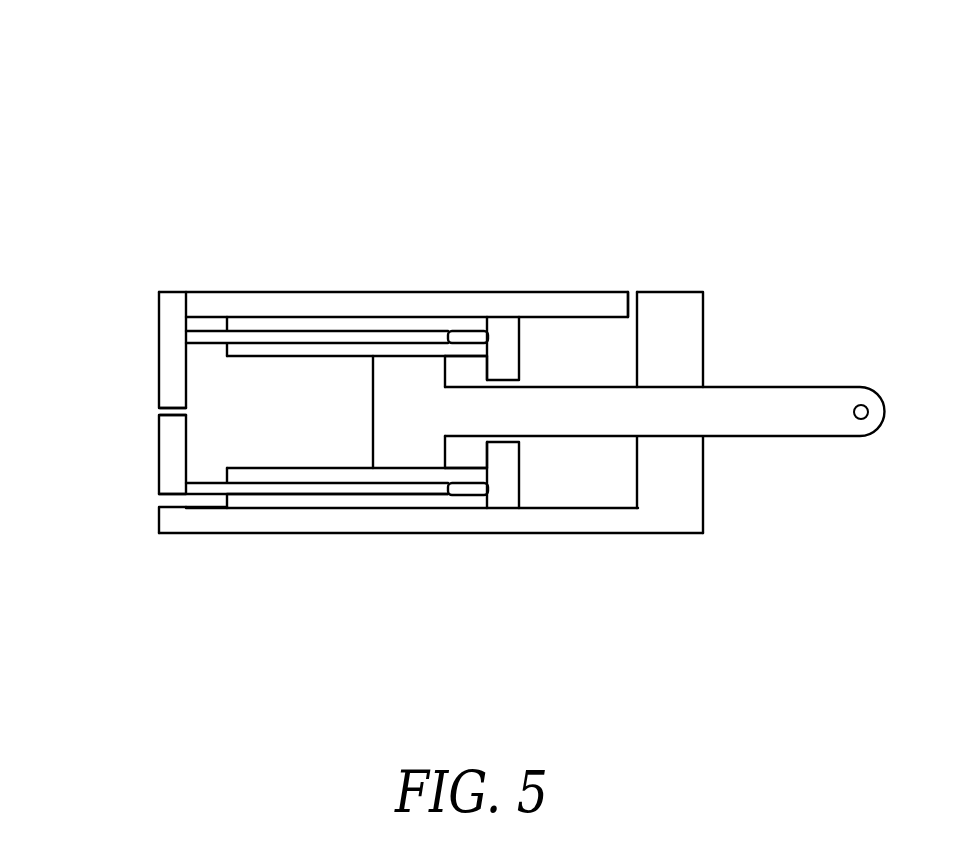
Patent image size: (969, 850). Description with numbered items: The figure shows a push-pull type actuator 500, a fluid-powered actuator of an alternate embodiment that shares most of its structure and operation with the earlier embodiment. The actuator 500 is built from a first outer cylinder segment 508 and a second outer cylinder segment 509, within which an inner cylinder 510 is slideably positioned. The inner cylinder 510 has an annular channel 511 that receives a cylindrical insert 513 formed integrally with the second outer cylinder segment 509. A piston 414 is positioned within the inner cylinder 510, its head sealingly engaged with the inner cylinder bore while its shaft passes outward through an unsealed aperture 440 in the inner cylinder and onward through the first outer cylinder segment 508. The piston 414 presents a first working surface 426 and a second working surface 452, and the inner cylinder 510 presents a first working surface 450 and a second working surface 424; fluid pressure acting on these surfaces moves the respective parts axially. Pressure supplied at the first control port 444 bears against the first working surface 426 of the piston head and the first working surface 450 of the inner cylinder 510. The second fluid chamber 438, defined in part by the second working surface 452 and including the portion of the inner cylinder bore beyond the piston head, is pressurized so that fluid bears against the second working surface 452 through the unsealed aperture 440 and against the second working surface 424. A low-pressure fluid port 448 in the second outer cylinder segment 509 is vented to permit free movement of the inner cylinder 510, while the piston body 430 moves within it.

The push-pull type actuator 500 is at (173, 92).
The second outer cylinder segment 509 is at (176, 355).
The first control port 444 is at (170, 416).
The low-pressure fluid port 448 is at (176, 503).
The first outer cylinder segment 508 is at (690, 487).
The second fluid chamber 438 is at (602, 365).
The cylindrical insert 513 is at (356, 337).
The first working surface of the inner cylinder 450 is at (215, 345).
The first working surface of the piston 426 is at (360, 381).
The piston 430 is at (296, 436).
The piston 414 is at (612, 420).
The second working surface of the piston 452 is at (445, 370).
The inner cylinder 510 is at (505, 338).
The annular channel 511 is at (480, 333).
The unsealed aperture 440 is at (632, 308).
The second working surface of the inner cylinder 424 is at (520, 477).